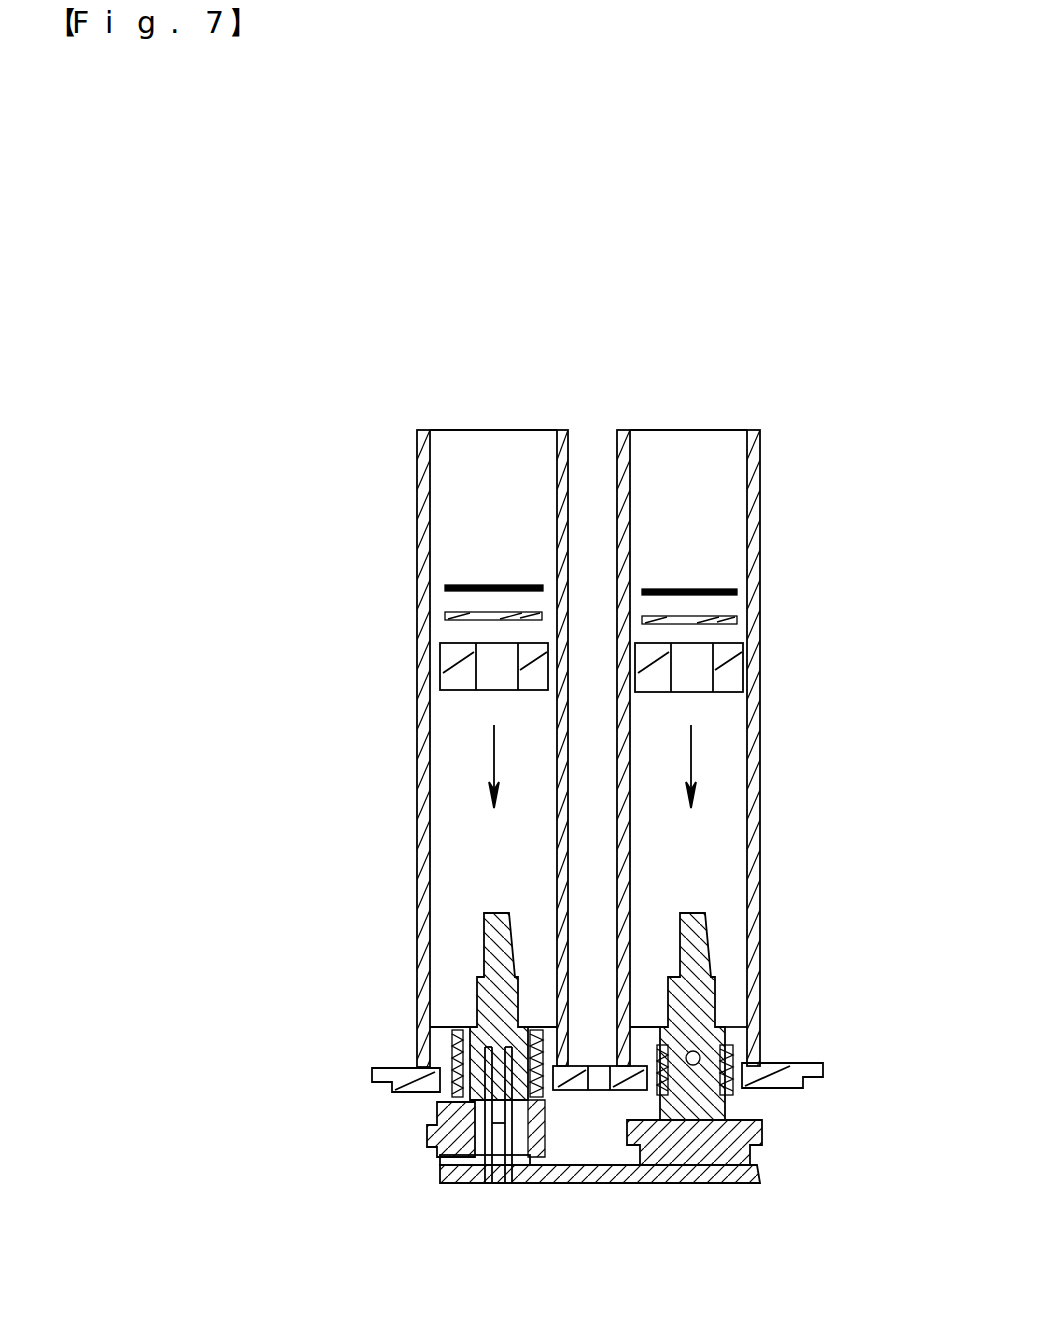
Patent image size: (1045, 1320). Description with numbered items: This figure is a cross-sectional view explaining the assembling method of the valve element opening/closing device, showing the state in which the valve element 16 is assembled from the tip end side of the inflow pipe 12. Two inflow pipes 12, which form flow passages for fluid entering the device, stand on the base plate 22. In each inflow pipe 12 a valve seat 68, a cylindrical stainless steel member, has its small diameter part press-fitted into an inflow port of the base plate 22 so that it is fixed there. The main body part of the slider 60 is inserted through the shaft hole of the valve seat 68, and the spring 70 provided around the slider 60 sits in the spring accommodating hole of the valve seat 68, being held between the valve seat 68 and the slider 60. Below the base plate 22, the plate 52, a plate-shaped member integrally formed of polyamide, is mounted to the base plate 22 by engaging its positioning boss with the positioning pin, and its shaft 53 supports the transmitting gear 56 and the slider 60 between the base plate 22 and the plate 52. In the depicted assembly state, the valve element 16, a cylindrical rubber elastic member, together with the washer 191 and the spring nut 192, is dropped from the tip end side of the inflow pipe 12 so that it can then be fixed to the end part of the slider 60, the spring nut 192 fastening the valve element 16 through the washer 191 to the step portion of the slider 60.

The inflow pipe 12 is at (563, 462).
The spring nut 192 is at (450, 588).
The washer 191 is at (452, 615).
The valve element 16 is at (442, 656).
The slider 60 is at (492, 930).
The valve seat 68 is at (748, 1012).
The spring 70 is at (455, 1060).
The base plate 22 is at (822, 1063).
The transmitting gear 56 is at (427, 1138).
The shaft 53 is at (440, 1160).
The plate 52 is at (515, 1187).